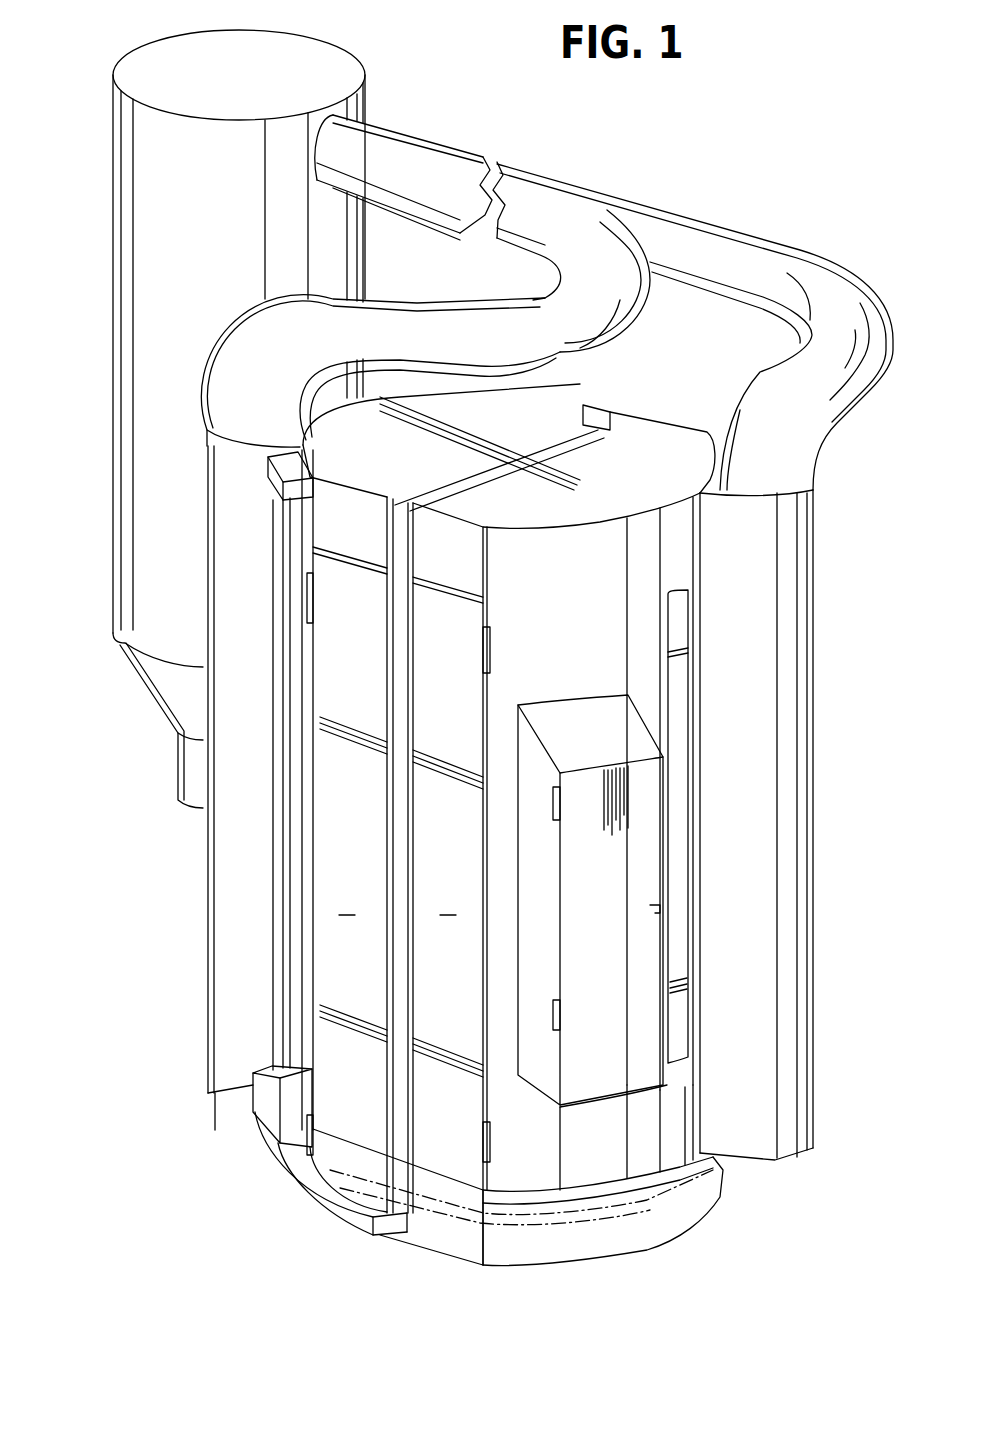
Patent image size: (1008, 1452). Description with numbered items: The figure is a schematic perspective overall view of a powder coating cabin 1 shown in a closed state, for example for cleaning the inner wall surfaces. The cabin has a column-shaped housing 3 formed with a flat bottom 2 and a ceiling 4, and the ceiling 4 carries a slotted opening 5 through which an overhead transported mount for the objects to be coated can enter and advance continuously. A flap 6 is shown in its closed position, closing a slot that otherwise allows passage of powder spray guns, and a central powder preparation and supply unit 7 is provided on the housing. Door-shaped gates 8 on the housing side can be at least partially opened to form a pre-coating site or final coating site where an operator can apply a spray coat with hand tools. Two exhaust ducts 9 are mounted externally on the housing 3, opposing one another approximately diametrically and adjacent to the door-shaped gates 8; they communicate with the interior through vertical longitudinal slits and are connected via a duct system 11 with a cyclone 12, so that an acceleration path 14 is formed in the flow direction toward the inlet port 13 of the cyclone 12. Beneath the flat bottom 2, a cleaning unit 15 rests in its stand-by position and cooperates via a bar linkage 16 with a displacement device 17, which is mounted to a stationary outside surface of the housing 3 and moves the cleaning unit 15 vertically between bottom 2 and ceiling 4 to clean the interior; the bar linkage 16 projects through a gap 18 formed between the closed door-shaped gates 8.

The powder coating cabin 1 is at (780, 218).
The flat bottom 2 is at (653, 1173).
The housing 3 is at (617, 587).
The ceiling 4 is at (650, 447).
The slotted opening 5 is at (583, 405).
The flap 6 is at (678, 760).
The central powder preparation and supply unit 7 is at (637, 950).
The door-shaped gates 8 is at (398, 854).
The exhaust ducts 9 is at (765, 697).
The duct system 11 is at (628, 222).
The cyclone 12 is at (170, 250).
The inlet port 13 is at (333, 148).
The acceleration path 14 is at (437, 181).
The cleaning unit 15 is at (450, 1207).
The bar linkage 16 is at (300, 1172).
The displacement device 17 is at (273, 1083).
The gap 18 is at (405, 958).